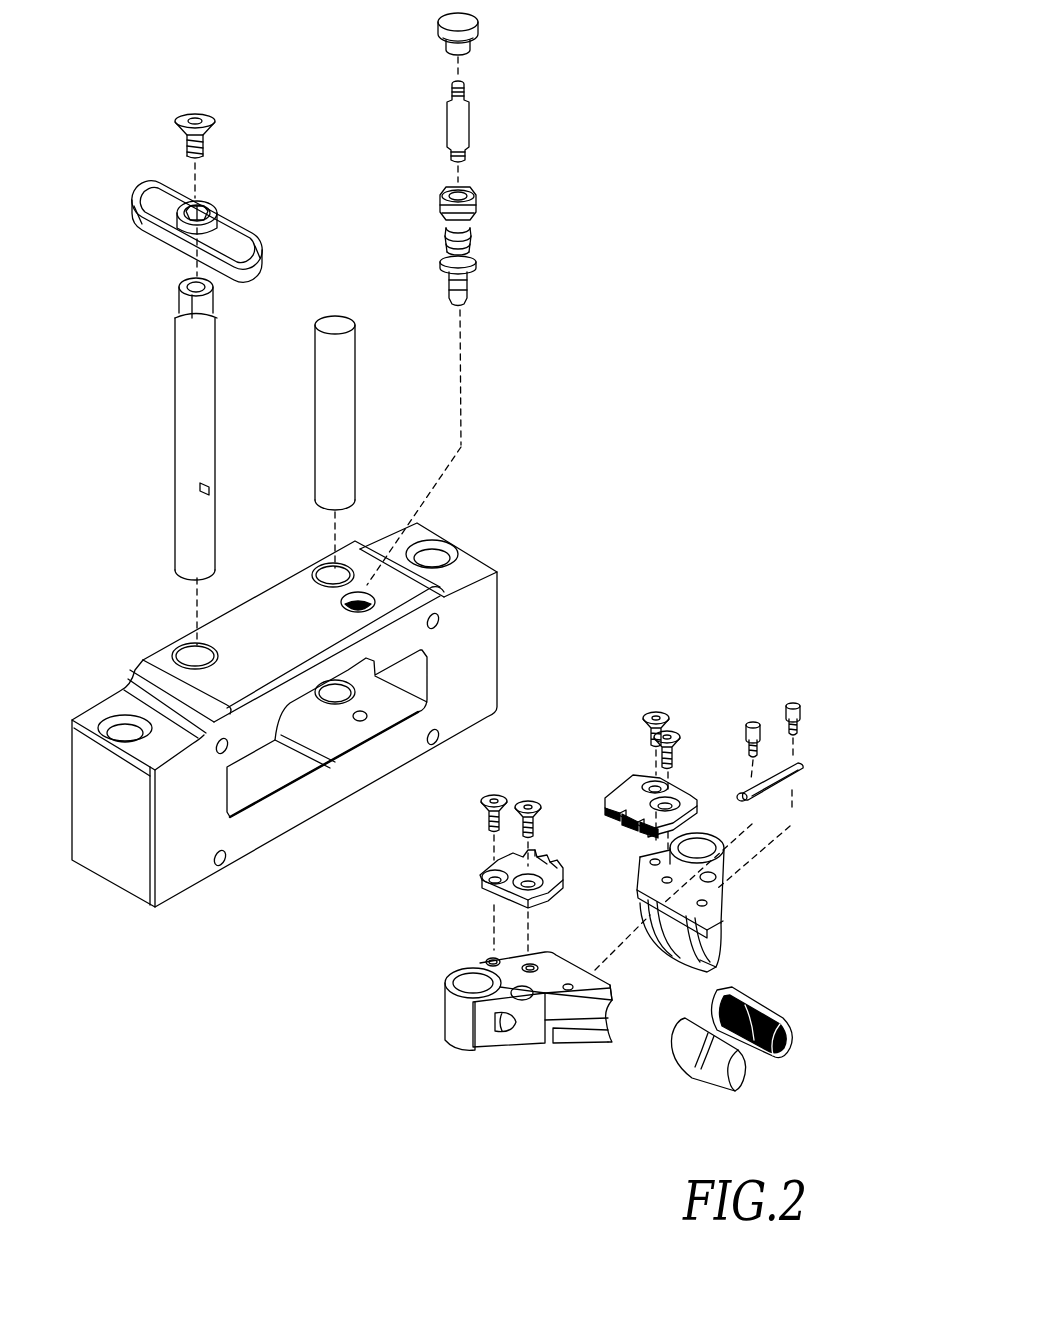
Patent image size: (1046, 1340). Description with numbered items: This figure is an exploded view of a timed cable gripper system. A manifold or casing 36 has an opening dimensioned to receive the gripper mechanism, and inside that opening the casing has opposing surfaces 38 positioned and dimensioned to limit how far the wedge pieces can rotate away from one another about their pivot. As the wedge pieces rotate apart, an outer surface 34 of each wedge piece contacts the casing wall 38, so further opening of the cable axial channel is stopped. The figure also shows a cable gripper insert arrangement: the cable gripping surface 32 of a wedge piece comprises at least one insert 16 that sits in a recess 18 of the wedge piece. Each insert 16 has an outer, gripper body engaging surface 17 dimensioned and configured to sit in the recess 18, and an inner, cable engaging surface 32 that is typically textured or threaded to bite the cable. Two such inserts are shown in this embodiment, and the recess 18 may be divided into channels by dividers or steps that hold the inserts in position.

The insert 16 is at (687, 912).
The gripper body engaging surface 17 is at (749, 1043).
The recess 18 is at (697, 952).
The concave surface 32 is at (764, 1047).
The outer surface 34 is at (549, 1028).
The manifold or casing 36 is at (337, 765).
The opposing surfaces 38 is at (428, 690).